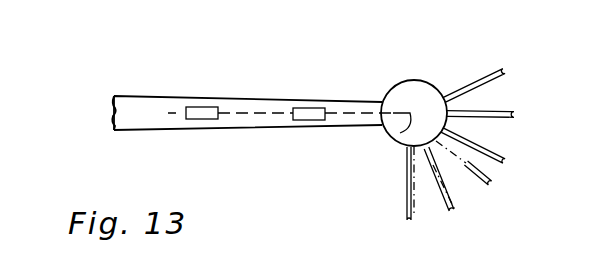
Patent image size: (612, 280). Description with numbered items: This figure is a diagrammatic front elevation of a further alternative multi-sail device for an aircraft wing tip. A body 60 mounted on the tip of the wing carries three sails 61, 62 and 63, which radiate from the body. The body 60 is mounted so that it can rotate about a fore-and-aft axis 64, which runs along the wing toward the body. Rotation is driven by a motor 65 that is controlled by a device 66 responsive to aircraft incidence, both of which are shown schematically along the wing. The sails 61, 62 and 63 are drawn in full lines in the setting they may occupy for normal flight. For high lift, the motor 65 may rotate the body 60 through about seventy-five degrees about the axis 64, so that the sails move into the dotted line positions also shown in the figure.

The body 60 is at (403, 80).
The sail 61 is at (480, 80).
The sail 62 is at (503, 110).
The sail 63 is at (497, 153).
The fore-and-aft axis 64 is at (398, 128).
The motor 65 is at (310, 108).
The device 66 is at (206, 106).